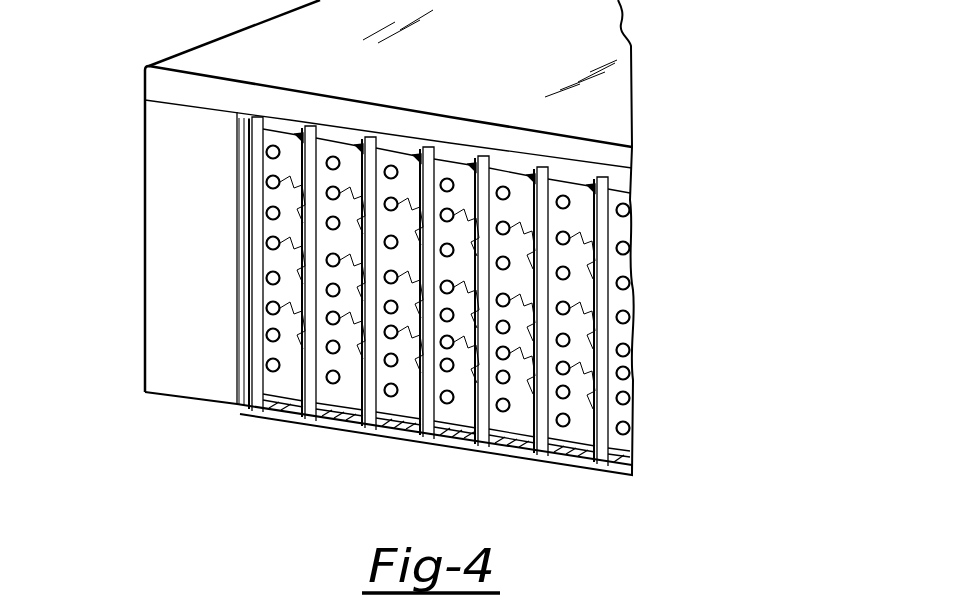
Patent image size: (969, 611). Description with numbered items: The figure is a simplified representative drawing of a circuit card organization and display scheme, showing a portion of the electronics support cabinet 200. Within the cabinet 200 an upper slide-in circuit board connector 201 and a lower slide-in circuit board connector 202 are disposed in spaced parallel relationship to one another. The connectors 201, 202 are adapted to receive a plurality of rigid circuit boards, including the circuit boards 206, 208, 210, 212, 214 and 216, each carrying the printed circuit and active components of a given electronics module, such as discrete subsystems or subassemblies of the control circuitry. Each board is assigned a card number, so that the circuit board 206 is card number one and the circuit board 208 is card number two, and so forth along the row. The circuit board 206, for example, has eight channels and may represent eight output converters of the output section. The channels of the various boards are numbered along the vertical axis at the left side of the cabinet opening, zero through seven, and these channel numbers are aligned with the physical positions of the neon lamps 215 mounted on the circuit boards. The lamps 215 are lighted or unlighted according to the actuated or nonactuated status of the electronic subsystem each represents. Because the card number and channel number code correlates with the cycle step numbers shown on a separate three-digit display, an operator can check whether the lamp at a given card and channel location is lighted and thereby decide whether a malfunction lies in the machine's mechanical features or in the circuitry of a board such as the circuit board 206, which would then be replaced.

The electronics support cabinet 200 is at (160, 84).
The upper slide-in circuit board connector 201 is at (376, 74).
The lower slide-in circuit board connector 202 is at (265, 407).
The circuit board 206 is at (315, 403).
The circuit board 208 is at (375, 418).
The circuit board 210 is at (420, 430).
The circuit board 212 is at (486, 183).
The circuit board 214 is at (548, 200).
The circuit board 216 is at (603, 230).
The neon lamps 215 is at (630, 317).